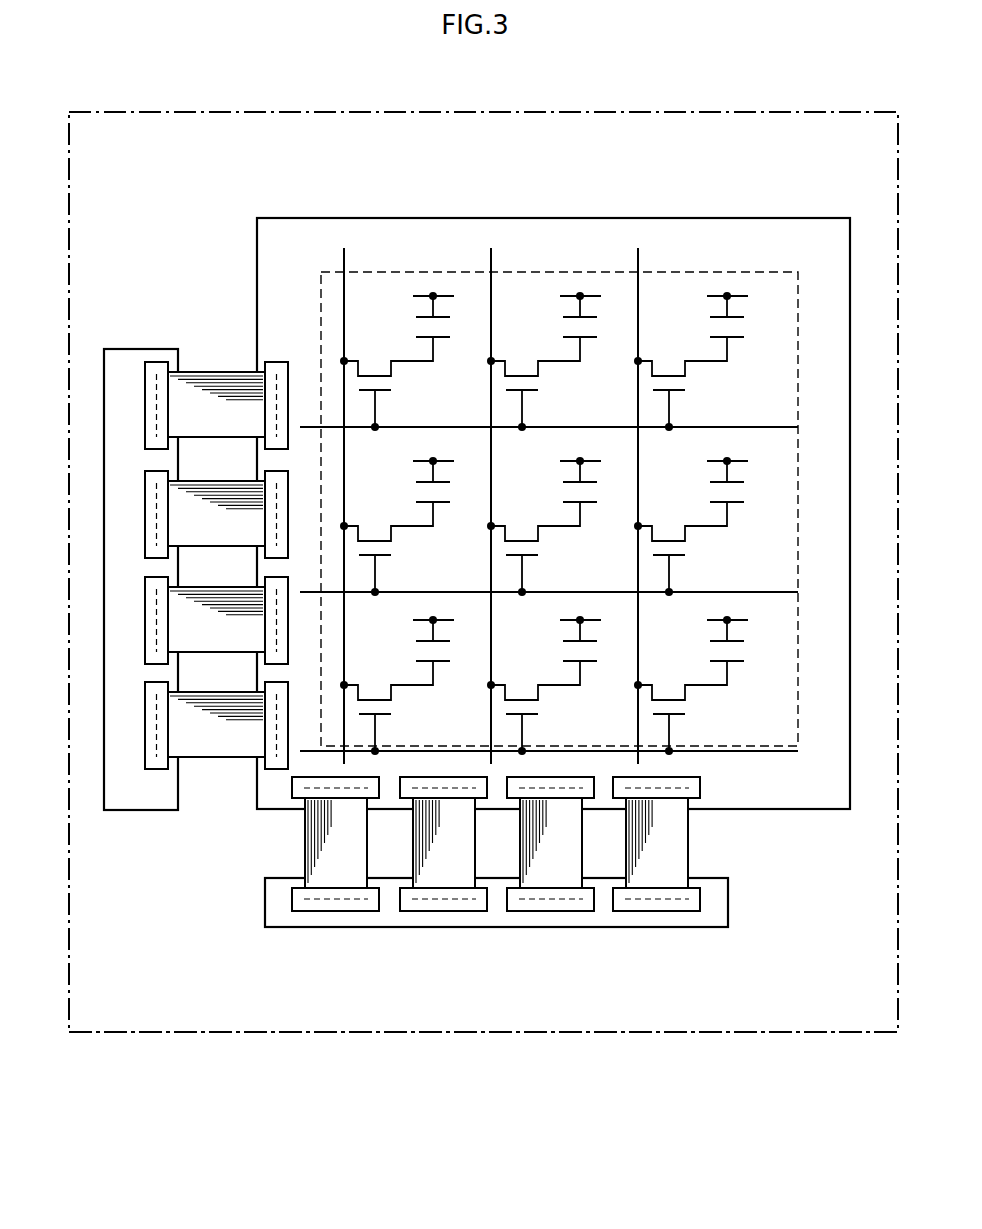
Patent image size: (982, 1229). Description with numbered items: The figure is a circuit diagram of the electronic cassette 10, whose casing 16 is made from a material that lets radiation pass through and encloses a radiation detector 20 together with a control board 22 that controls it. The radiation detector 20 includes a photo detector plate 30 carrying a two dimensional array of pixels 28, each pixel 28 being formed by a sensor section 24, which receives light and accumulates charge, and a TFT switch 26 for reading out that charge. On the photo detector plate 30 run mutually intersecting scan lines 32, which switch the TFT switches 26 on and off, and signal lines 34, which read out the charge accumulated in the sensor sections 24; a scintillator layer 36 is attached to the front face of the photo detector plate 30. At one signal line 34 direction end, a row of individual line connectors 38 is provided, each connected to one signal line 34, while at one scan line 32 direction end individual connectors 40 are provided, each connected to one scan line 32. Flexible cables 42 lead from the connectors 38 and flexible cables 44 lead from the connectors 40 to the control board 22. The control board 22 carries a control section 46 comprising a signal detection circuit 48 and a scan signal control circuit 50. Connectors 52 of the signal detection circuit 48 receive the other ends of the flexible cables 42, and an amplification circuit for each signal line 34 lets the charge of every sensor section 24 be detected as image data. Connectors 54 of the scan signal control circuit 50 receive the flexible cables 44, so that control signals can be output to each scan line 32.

The electronic cassette 10 is at (690, 112).
The casing 16 is at (660, 1032).
The radiation detector 20 is at (648, 218).
The control board 22 is at (416, 665).
The sensor section 24 is at (591, 339).
The TFT switch 26 is at (519, 375).
The pixel 28 is at (580, 291).
The photo detector plate 30 is at (746, 217).
The scan line 32 is at (762, 426).
The signal line 34 is at (346, 261).
The scintillator layer 36 is at (771, 270).
The line connector 38 is at (357, 777).
The connector 40 is at (288, 382).
The flexible cable 42 is at (367, 855).
The flexible cable 44 is at (200, 437).
The control section 46 is at (416, 665).
The signal detection circuit 48 is at (458, 906).
The scan signal control circuit 50 is at (138, 812).
The connector 52 is at (331, 911).
The connector 54 is at (145, 401).